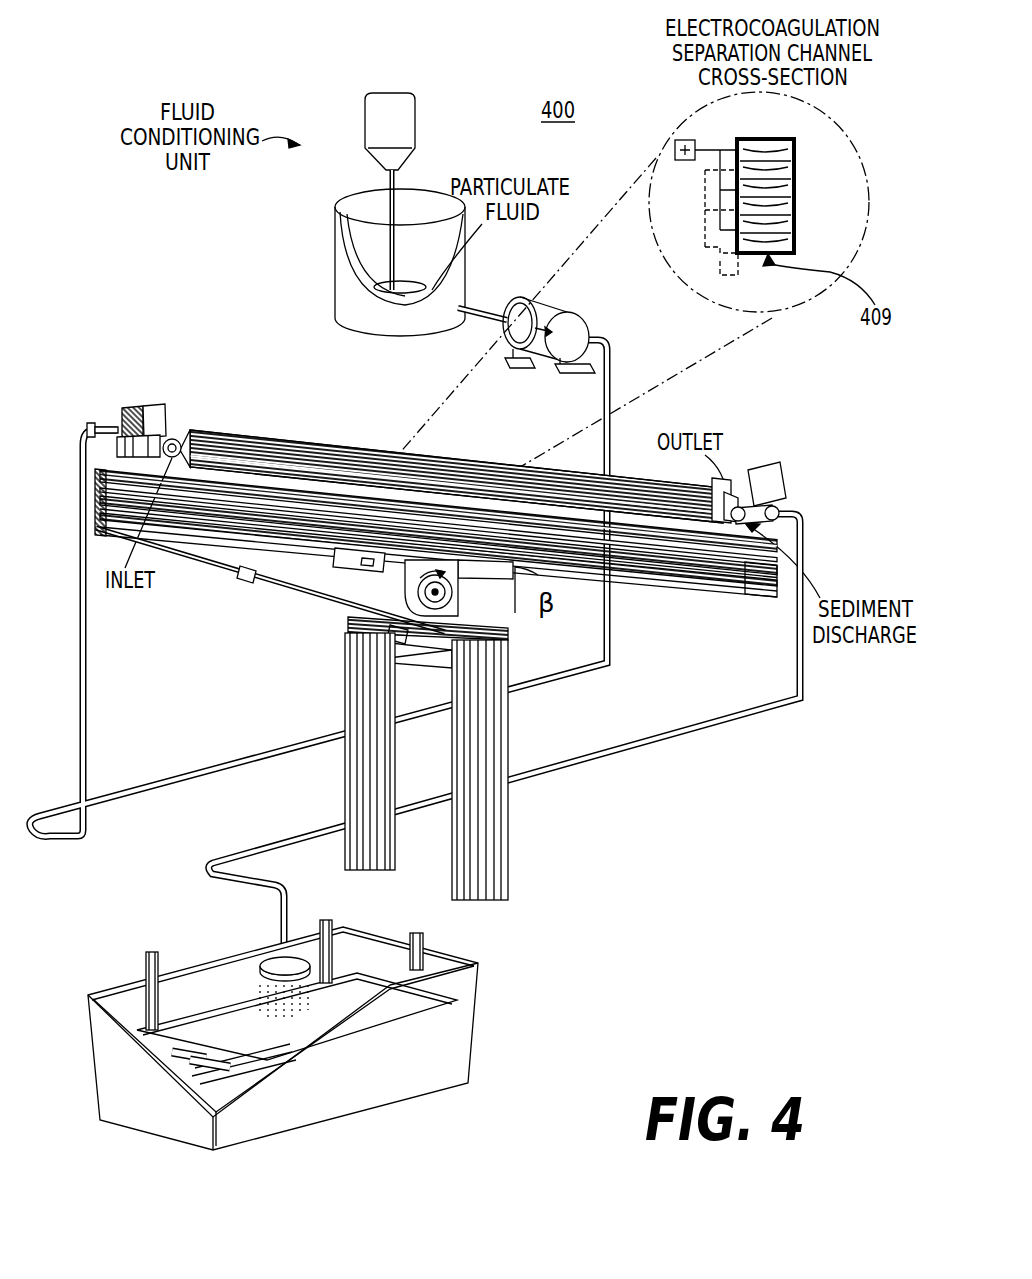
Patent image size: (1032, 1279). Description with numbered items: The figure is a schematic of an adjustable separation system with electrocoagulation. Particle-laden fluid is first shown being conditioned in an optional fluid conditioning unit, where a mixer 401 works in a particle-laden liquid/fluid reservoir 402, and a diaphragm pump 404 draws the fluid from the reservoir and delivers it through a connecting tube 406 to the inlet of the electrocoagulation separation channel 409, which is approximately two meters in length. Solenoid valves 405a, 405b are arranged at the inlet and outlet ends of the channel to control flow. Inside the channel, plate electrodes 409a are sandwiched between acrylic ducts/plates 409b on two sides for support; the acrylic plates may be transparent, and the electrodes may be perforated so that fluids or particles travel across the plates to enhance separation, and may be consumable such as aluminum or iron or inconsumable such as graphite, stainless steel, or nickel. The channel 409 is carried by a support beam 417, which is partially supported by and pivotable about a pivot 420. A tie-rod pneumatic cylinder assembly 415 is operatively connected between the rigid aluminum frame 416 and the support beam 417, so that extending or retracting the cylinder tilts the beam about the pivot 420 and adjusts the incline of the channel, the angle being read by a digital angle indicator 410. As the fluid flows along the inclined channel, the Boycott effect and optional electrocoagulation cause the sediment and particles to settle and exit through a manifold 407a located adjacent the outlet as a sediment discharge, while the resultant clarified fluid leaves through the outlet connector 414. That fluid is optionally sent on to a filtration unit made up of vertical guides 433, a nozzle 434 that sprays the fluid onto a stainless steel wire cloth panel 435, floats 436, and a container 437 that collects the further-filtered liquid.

The mixer 401 is at (415, 113).
The particle-laden liquid/fluid reservoir 402 is at (405, 196).
The diaphragm pump 404 is at (572, 312).
The solenoid valve 405a is at (165, 410).
The solenoid valve 405b is at (775, 470).
The connecting tube 406 is at (610, 642).
The manifold 407a is at (720, 515).
The electrocoagulation separation channel 409 is at (362, 446).
The plate electrodes 409a is at (793, 163).
The acrylic ducts/plates 409b is at (793, 212).
The digital angle indicator 410 is at (360, 573).
The outlet connector 414 is at (730, 497).
The tie-rod pneumatic cylinder assembly 415 is at (298, 608).
The frame 416 is at (430, 652).
The support beam 417 is at (740, 600).
The pivot 420 is at (456, 592).
The vertical guides 433 is at (163, 968).
The nozzle 434 is at (262, 968).
The wire cloth panel 435 is at (262, 1032).
The floats 436 is at (190, 1068).
The container 437 is at (400, 1090).